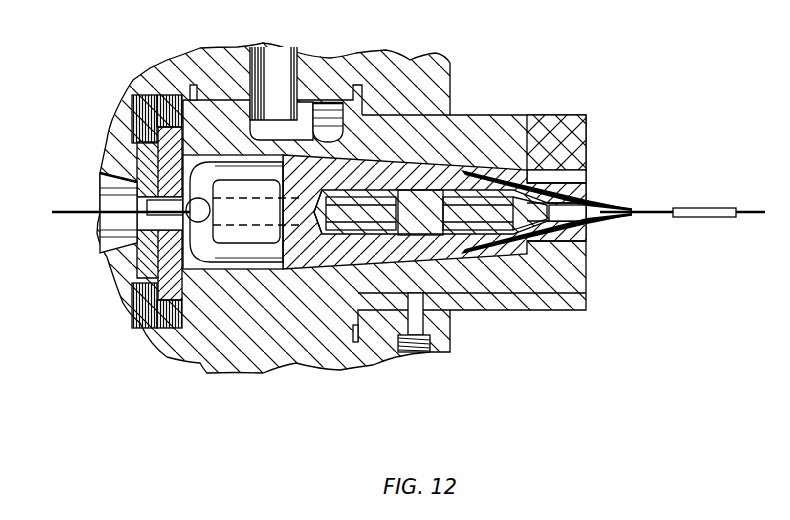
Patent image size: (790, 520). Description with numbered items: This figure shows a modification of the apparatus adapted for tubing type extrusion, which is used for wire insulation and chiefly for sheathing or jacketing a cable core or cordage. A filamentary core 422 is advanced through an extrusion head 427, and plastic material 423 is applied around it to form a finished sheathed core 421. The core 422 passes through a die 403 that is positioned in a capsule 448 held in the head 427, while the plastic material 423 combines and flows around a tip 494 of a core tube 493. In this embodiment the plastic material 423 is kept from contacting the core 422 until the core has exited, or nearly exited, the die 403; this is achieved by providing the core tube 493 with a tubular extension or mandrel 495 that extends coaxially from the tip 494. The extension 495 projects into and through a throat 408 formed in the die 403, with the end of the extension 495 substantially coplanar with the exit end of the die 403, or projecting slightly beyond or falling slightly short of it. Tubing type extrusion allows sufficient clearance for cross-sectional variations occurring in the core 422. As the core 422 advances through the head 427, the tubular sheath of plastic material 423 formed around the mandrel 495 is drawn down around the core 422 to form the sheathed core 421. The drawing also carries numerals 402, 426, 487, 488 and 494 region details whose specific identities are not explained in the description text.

The end cap 402 is at (586, 117).
The die 403 is at (587, 183).
The throat 408 is at (591, 229).
The sheathed core 421 is at (707, 231).
The filamentary core 422 is at (70, 211).
The plastic material 423 is at (636, 207).
The connector assembly 426 is at (493, 73).
The extrusion head 427 is at (316, 356).
The capsule 448 is at (510, 116).
The insert body 487 is at (223, 257).
The ball seat 488 is at (200, 242).
The core tube 493 is at (468, 227).
The tip 494 is at (545, 234).
The tubular extension or mandrel 495 is at (578, 207).